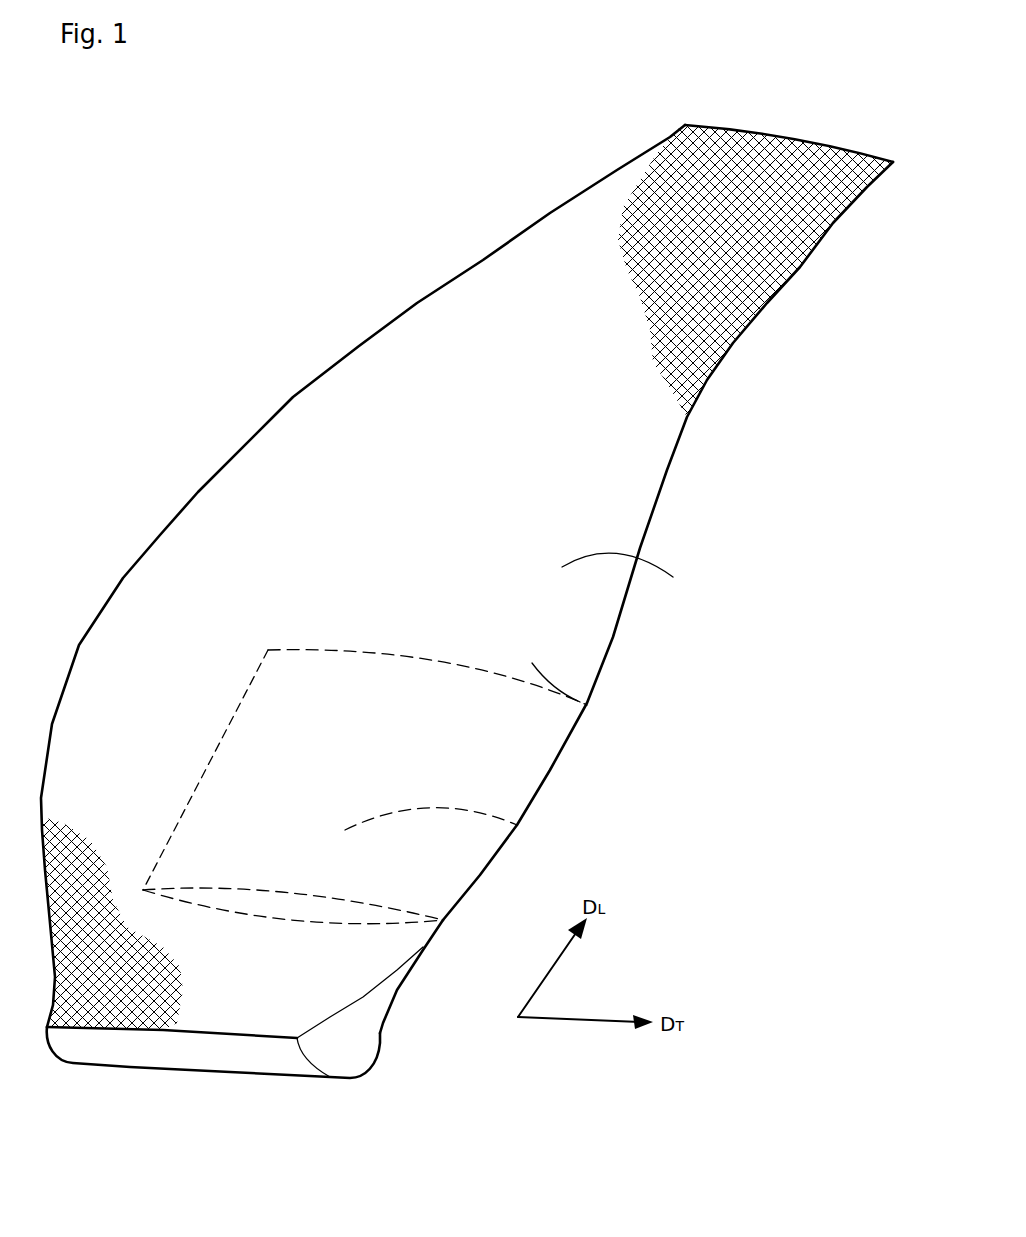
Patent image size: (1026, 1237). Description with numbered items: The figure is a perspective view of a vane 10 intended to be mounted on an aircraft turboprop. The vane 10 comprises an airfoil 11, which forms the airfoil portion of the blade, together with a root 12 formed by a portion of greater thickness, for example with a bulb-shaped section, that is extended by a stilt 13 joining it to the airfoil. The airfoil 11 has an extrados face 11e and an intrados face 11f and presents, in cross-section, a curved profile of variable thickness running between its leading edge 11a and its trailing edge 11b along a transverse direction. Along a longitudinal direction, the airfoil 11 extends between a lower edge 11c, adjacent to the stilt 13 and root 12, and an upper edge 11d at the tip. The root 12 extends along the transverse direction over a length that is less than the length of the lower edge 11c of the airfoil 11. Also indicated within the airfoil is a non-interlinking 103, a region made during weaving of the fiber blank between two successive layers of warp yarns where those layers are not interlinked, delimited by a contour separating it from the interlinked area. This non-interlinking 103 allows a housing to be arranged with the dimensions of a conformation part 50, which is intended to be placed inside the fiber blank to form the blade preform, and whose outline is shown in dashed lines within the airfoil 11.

The vane 10 is at (332, 227).
The airfoil 11 is at (292, 449).
The leading edge 11a is at (127, 578).
The trailing edge 11b is at (668, 468).
The lower edge 11c is at (430, 943).
The upper edge 11d is at (763, 133).
The extrados face 11e is at (630, 578).
The intrados face 11f is at (587, 703).
The root 12 is at (237, 1057).
The stilt 13 is at (357, 1033).
The conformation part 50 is at (527, 825).
The non-interlinking 103 is at (420, 655).